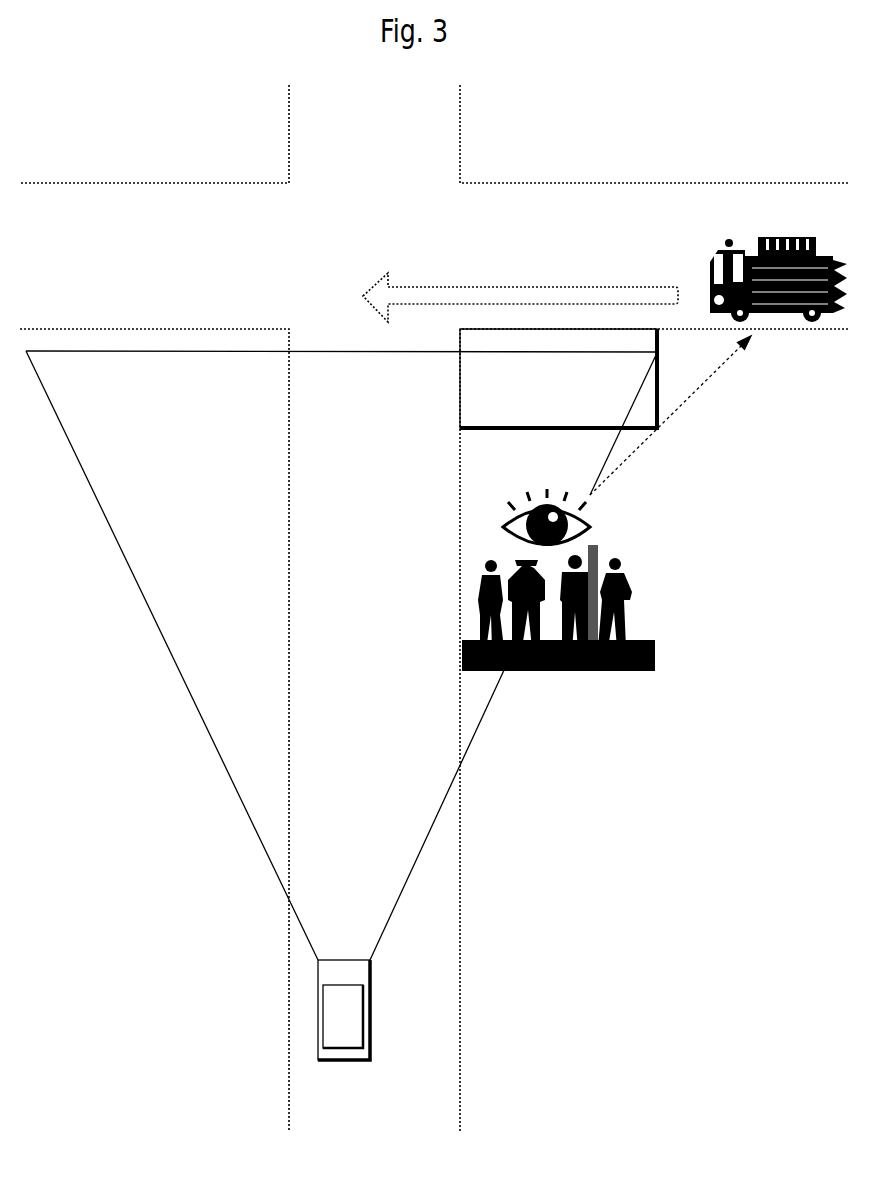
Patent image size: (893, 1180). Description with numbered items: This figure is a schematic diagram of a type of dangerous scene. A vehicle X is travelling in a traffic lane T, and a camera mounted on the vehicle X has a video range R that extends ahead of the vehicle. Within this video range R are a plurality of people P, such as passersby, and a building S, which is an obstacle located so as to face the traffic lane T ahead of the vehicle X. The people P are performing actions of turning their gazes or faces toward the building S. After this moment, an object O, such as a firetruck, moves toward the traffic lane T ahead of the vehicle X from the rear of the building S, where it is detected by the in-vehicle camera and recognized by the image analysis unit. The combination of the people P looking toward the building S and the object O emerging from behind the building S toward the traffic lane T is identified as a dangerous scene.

The object O is at (770, 240).
The building S is at (503, 430).
The plurality of people P is at (642, 674).
The video range R is at (204, 727).
The traffic lane T is at (460, 862).
The vehicle X is at (340, 1062).